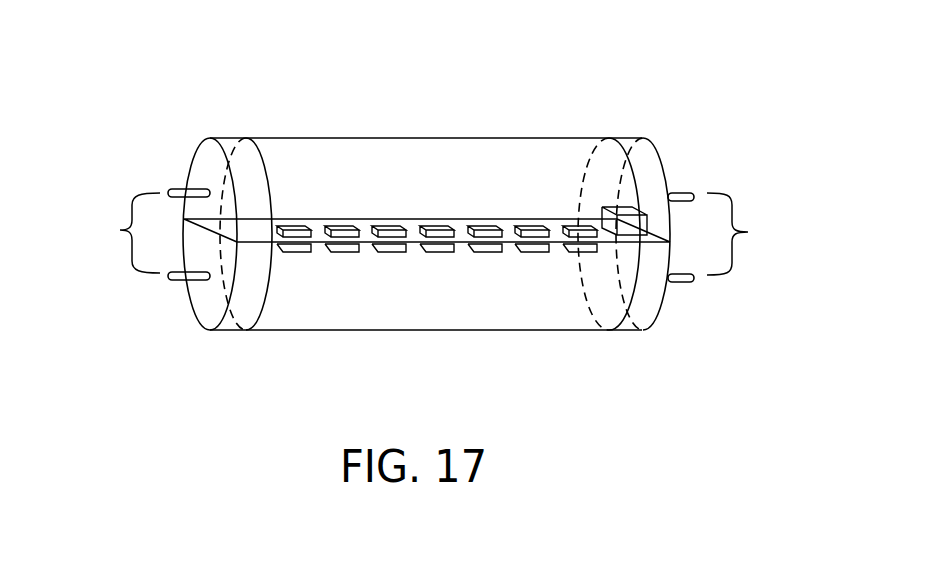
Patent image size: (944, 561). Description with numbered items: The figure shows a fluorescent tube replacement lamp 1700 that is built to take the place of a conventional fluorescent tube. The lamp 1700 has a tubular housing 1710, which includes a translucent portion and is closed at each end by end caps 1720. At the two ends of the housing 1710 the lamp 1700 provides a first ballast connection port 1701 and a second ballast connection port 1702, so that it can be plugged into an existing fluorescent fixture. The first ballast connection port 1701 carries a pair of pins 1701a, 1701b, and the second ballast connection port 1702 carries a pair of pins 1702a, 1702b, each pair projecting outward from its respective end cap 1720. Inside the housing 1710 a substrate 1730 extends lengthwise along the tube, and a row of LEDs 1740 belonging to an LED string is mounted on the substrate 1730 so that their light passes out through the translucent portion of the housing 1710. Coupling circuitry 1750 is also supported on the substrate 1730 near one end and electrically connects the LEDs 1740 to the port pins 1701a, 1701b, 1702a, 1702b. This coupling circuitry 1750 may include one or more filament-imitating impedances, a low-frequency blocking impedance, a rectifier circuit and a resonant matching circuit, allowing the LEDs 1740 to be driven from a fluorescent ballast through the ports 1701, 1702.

The fluorescent tube replacement lamp 1700 is at (518, 67).
The tubular housing 1710 is at (385, 138).
The end caps 1720 is at (231, 139).
The substrate 1730 is at (385, 218).
The LEDs 1740 is at (297, 222).
The coupling circuitry 1750 is at (603, 206).
The first ballast connection port 1701 is at (116, 233).
The pin 1701a is at (175, 188).
The pin 1701b is at (175, 281).
The second ballast connection port 1702 is at (773, 234).
The pin 1702a is at (685, 193).
The pin 1702b is at (685, 282).